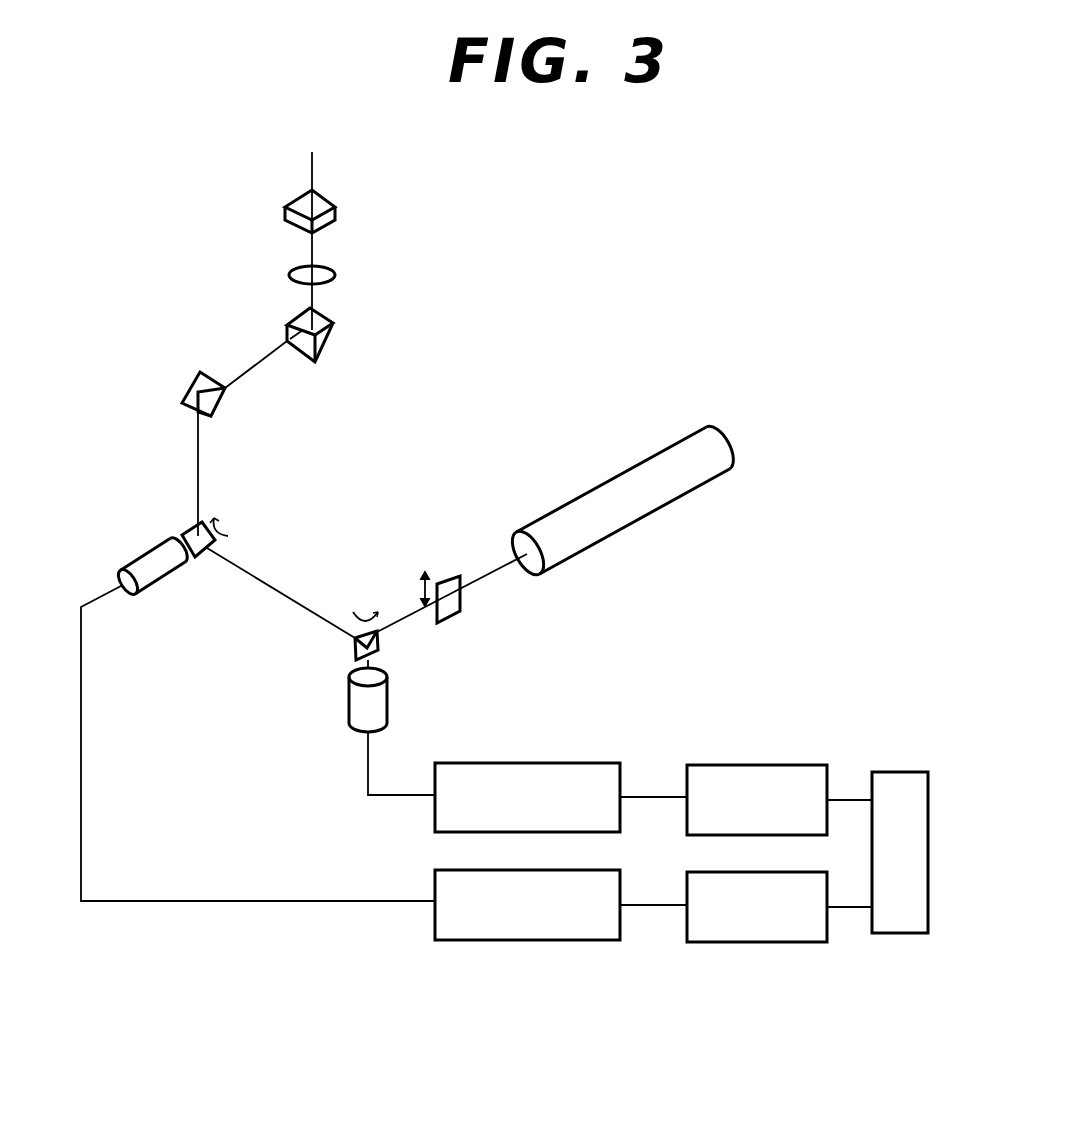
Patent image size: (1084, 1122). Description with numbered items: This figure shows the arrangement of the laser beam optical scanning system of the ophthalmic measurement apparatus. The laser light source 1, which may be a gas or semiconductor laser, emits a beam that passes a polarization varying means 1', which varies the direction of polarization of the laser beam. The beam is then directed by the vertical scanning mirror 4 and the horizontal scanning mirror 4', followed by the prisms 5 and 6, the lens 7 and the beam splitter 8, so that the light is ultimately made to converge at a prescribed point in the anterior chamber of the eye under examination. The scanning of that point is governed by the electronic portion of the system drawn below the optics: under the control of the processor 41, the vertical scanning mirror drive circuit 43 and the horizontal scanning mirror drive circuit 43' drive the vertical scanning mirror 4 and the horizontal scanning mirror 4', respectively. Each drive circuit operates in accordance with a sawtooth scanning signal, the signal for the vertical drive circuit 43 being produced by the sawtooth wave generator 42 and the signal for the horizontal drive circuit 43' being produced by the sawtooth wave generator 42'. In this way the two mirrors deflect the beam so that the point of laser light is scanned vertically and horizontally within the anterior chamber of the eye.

The laser light source 1 is at (619, 502).
The polarization varying means 1' is at (453, 570).
The vertical scanning mirror 4 is at (392, 703).
The horizontal scanning mirror 4' is at (258, 709).
The prism 5 is at (228, 403).
The prism 6 is at (331, 340).
The lens 7 is at (333, 268).
The beam splitter 8 is at (330, 198).
The processor 41 is at (885, 772).
The sawtooth wave generator 42 is at (757, 778).
The sawtooth wave generator 42' is at (757, 885).
The vertical scanning mirror drive circuit 43 is at (527, 776).
The horizontal scanning mirror drive circuit 43' is at (527, 884).